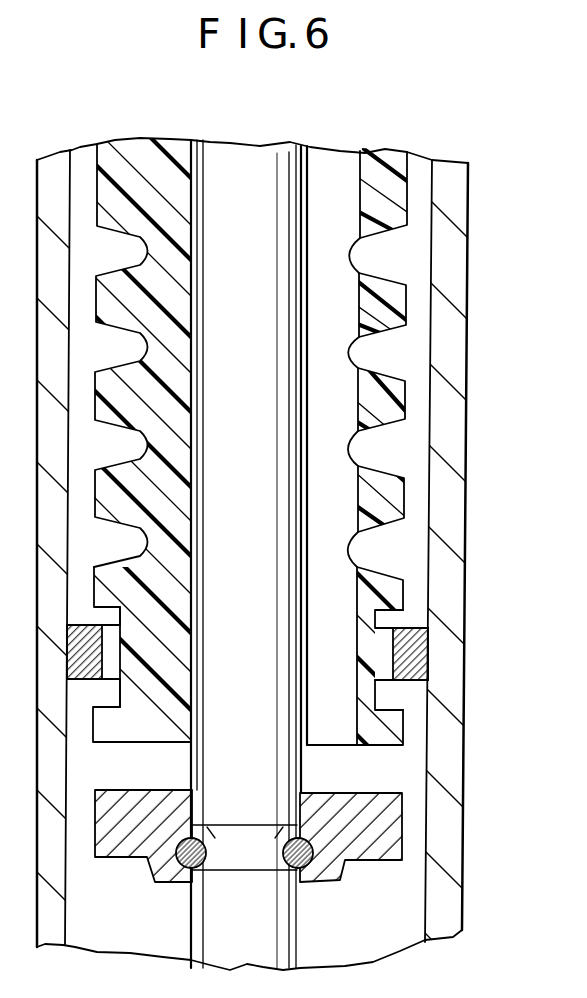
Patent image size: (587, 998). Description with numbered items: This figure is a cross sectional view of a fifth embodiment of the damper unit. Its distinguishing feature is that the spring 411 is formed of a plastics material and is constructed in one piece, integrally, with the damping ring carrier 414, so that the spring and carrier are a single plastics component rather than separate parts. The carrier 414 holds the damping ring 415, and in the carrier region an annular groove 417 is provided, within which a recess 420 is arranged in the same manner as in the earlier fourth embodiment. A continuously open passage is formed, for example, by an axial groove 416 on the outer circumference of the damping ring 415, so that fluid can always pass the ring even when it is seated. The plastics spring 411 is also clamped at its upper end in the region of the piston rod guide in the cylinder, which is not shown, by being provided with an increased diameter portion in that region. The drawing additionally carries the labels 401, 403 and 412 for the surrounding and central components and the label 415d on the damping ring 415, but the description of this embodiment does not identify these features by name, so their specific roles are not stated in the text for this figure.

The cylinder tube 401 is at (455, 188).
The piston rod 403 is at (289, 186).
The spring 411 is at (398, 300).
The piston 412 is at (390, 818).
The damping ring carrier 414 is at (392, 592).
The damping ring 415 is at (410, 655).
The outer surface of sealing ring 415d is at (430, 647).
The axial groove 416 is at (425, 678).
The annular groove 417 is at (388, 695).
The recess 420 is at (395, 622).